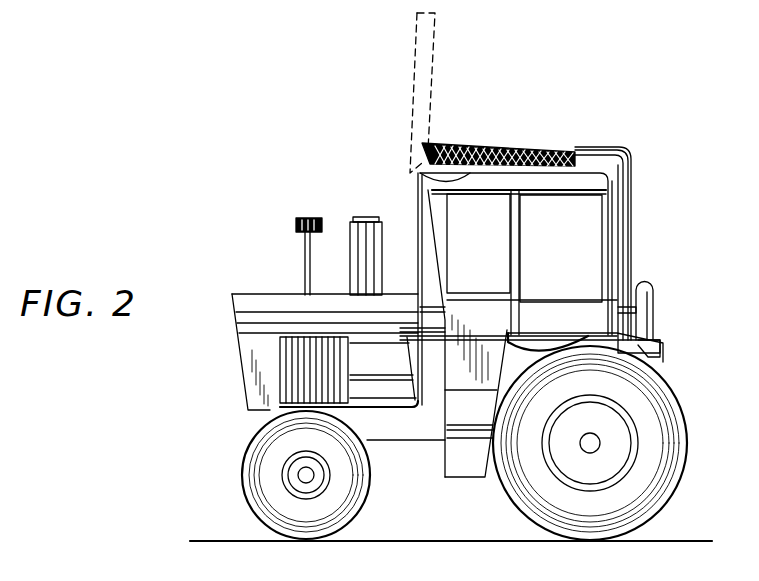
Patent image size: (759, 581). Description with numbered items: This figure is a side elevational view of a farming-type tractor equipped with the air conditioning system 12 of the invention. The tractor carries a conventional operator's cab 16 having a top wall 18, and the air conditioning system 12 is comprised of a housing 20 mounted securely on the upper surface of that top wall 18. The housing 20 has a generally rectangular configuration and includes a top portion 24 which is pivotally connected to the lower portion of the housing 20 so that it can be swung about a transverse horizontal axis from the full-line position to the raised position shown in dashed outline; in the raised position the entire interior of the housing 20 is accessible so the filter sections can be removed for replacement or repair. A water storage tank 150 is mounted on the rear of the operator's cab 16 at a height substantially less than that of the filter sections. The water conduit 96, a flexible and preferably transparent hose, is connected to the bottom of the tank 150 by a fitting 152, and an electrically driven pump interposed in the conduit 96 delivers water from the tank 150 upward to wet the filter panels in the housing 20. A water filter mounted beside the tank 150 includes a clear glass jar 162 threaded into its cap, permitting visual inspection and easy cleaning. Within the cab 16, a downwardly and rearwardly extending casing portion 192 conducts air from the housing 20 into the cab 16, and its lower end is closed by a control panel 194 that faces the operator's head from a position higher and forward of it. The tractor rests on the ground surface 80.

The air conditioning system 12 is at (578, 150).
The operator's cab 16 is at (440, 207).
The top wall 18 is at (420, 178).
The housing 20 is at (518, 150).
The top portion 24 is at (413, 92).
The ground surface 80 is at (672, 541).
The water conduit 96 is at (630, 168).
The water storage tank 150 is at (642, 322).
The fitting 152 is at (660, 353).
The clear glass jar 162 is at (628, 327).
The casing portion 192 is at (467, 196).
The control panel 194 is at (482, 200).